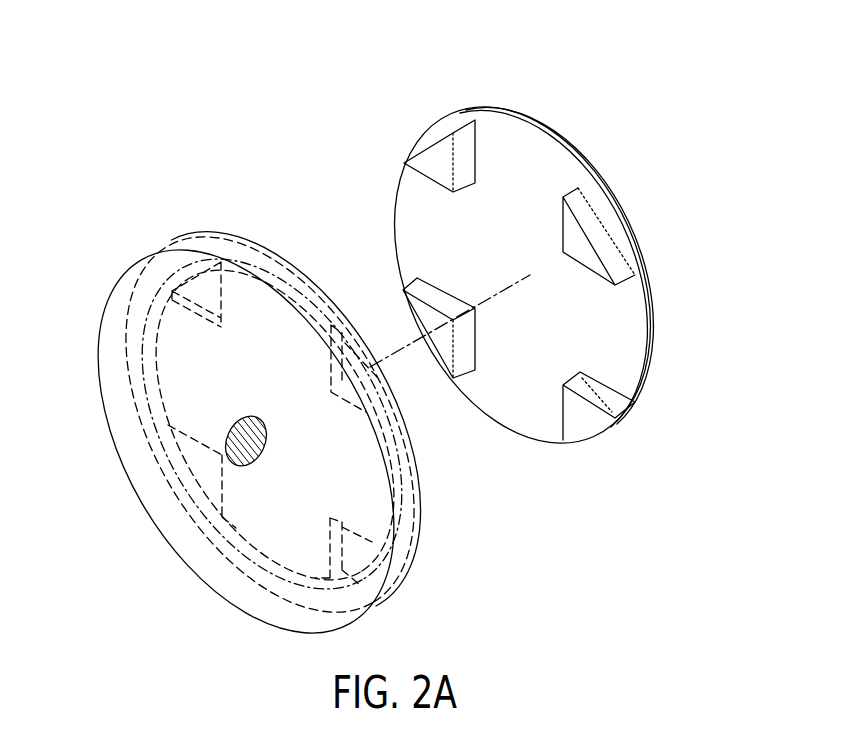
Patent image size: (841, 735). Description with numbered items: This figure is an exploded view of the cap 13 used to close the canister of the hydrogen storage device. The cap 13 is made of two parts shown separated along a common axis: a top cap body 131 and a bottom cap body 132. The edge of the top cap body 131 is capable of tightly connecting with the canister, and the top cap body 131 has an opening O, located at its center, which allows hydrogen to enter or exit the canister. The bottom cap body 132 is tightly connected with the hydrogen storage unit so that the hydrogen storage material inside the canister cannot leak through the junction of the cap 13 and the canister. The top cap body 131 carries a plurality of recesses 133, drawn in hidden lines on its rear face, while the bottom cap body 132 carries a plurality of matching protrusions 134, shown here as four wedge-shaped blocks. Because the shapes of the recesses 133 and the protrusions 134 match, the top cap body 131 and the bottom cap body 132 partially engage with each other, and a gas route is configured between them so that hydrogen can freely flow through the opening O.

The cap 13 is at (182, 68).
The top cap body 131 is at (130, 242).
The bottom cap body 132 is at (432, 102).
The recesses 133 is at (221, 262).
The protrusions 134 is at (428, 164).
The opening O is at (225, 420).